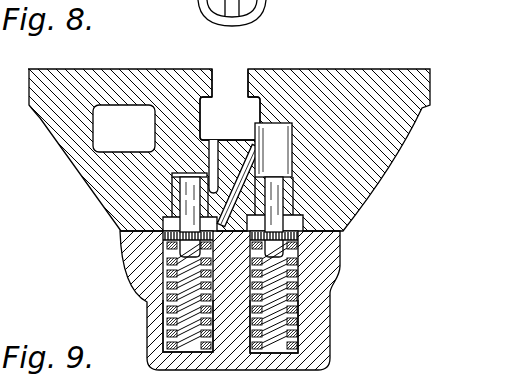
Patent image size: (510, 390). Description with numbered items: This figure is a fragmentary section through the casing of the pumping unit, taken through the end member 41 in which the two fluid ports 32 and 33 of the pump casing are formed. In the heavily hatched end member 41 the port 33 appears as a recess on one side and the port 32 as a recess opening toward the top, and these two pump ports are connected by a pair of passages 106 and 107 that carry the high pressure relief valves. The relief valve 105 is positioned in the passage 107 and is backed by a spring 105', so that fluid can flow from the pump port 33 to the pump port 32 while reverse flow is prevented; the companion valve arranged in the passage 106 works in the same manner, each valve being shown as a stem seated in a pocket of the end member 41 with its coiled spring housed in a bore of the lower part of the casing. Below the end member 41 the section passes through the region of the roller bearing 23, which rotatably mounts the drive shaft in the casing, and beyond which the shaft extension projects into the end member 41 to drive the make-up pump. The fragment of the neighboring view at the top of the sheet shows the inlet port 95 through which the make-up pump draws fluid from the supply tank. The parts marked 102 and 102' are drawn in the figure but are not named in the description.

The inlet port 95 is at (204, 14).
The end member 41 is at (381, 152).
The port 33 is at (100, 133).
The port 32 is at (250, 102).
The passage 107 is at (214, 189).
The passage 106 is at (241, 176).
The roller bearing 23 is at (315, 336).
The spring-loaded bolt 102 is at (138, 262).
The spring pocket 102' is at (150, 320).
The relief valve 105 is at (321, 238).
The spring 105' is at (316, 321).